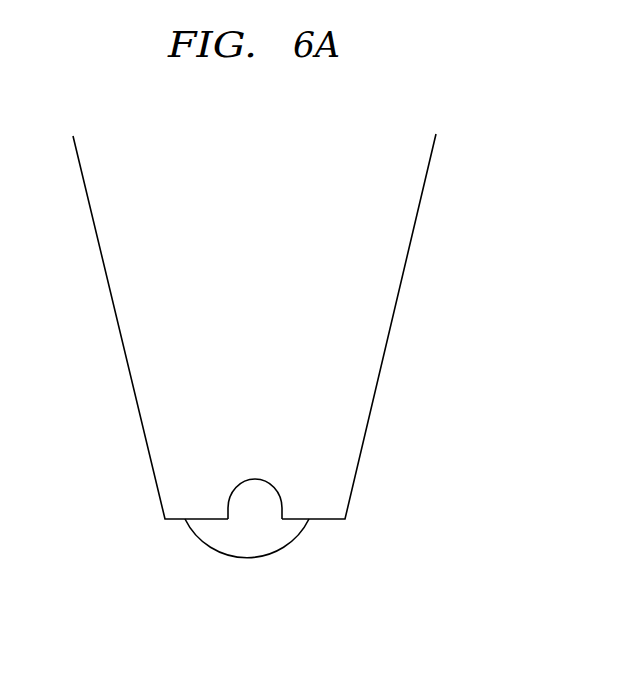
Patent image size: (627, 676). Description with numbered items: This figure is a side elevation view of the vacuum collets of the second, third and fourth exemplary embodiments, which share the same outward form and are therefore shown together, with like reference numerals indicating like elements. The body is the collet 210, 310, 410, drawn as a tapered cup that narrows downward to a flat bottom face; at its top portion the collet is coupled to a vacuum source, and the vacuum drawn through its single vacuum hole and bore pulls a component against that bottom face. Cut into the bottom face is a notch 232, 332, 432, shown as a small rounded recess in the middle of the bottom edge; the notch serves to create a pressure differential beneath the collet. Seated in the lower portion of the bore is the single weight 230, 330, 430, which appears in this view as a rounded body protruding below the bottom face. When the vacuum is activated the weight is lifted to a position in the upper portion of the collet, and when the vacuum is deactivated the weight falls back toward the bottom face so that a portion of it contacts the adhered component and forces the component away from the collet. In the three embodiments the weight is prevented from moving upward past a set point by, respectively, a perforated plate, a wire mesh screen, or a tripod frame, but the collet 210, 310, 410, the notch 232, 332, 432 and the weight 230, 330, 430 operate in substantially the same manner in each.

The vacuum collet 210 is at (346, 326).
The collet 310 is at (346, 326).
The collet 410 is at (422, 196).
The notch 232 is at (398, 472).
The notch 332 is at (398, 472).
The notch 432 is at (274, 484).
The weight 230 is at (331, 560).
The weight 330 is at (331, 560).
The weight 430 is at (290, 546).